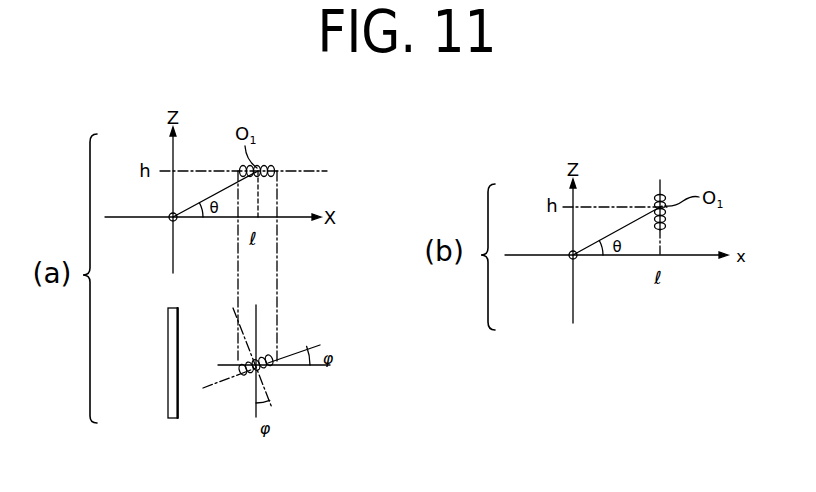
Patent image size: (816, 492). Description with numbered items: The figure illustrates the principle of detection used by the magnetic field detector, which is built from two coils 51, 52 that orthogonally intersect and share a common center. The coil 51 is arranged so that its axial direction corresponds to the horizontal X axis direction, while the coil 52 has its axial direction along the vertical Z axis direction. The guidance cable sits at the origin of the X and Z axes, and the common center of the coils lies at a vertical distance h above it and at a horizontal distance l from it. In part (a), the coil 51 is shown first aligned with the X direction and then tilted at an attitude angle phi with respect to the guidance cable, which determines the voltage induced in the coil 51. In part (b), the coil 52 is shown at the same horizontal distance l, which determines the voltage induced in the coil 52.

The coil 51 is at (273, 167).
The coil 52 is at (658, 194).